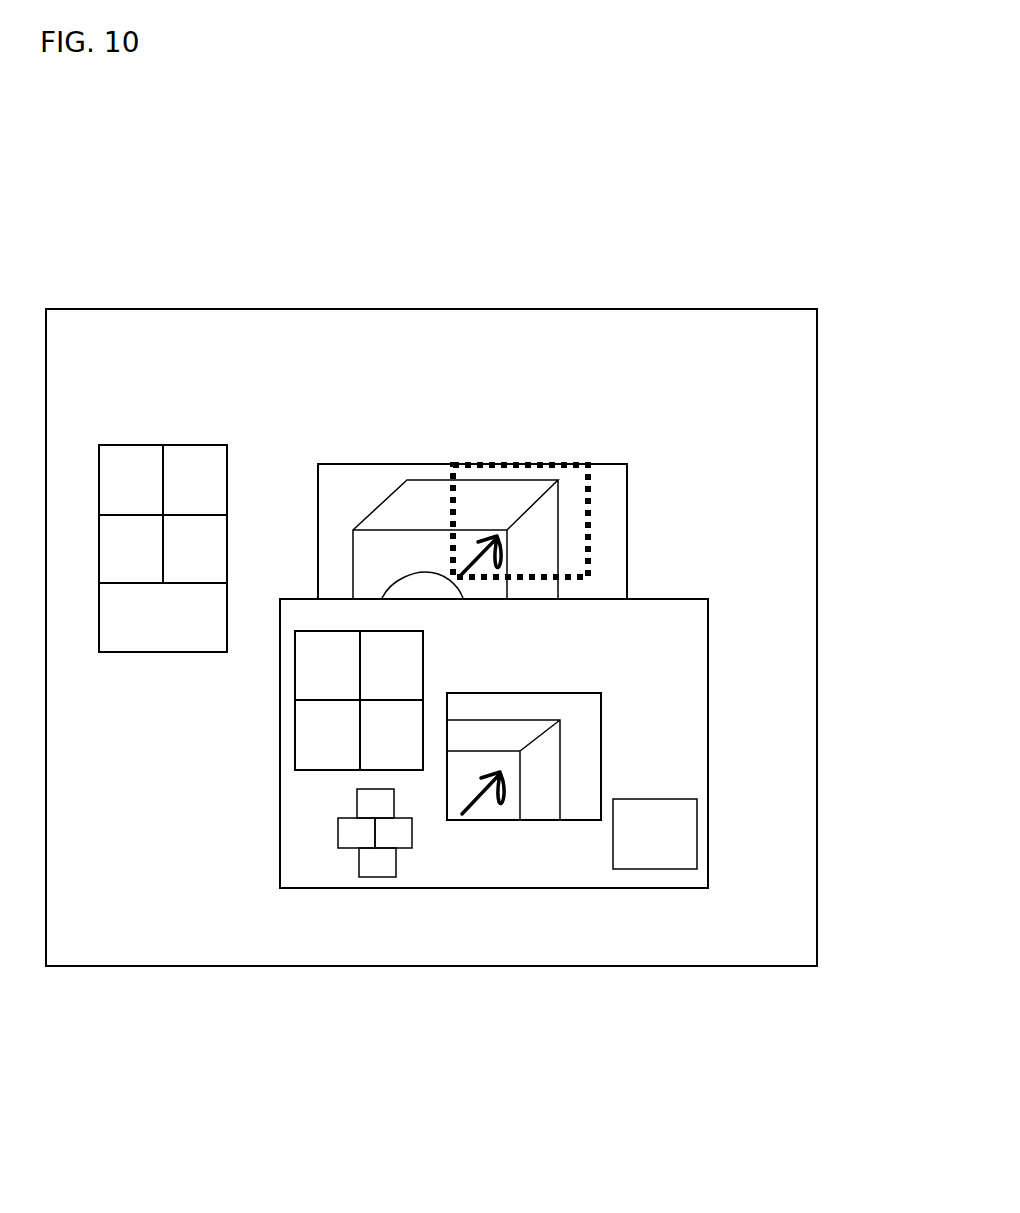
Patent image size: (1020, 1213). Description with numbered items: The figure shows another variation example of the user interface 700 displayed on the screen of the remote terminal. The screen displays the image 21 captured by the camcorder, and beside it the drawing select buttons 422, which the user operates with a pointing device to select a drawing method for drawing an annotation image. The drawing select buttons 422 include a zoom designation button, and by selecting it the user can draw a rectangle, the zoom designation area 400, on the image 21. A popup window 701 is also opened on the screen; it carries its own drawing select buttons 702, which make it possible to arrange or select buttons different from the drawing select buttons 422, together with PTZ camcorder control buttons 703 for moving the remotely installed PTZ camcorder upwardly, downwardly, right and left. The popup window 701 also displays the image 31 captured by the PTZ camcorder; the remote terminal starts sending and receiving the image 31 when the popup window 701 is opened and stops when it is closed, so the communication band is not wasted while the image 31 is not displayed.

The user interface 700 is at (273, 309).
The drawing select buttons 422 is at (112, 445).
The image captured by the camcorder 21 is at (353, 464).
The zoom designation area 400 is at (547, 450).
The popup window 701 is at (622, 900).
The drawing select buttons 702 is at (280, 717).
The image captured by the PTZ camcorder 31 is at (477, 693).
The PTZ camcorder control buttons 703 is at (317, 845).